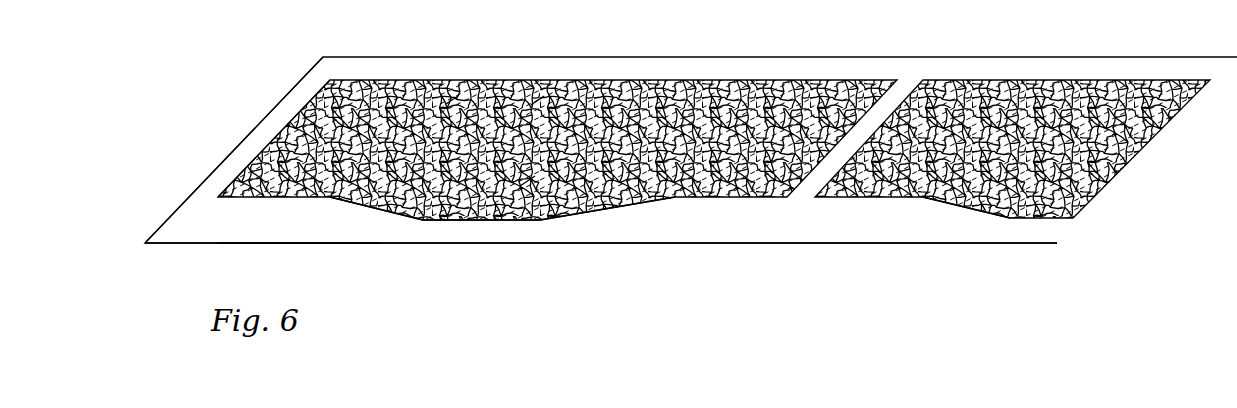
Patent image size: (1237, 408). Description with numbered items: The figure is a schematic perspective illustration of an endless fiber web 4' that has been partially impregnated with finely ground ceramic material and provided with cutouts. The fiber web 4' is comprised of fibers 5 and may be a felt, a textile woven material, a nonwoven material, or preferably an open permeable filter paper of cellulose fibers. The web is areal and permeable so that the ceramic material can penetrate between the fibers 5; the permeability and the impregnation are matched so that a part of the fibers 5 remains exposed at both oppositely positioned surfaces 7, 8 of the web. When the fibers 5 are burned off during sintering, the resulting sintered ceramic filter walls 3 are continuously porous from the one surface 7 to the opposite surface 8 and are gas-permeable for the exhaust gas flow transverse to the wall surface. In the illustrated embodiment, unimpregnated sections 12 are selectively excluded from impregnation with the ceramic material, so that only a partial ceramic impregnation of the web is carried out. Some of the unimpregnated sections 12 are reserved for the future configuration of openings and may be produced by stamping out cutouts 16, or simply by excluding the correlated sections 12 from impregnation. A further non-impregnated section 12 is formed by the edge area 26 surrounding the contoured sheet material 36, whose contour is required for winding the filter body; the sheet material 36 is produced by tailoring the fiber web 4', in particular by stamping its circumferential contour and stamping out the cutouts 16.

The endless fiber web 4' is at (688, 150).
The contoured sheet material 36 is at (280, 135).
The filter walls 3 is at (690, 108).
The surface 7 is at (452, 100).
The fibers 5 is at (537, 100).
The unimpregnated sections 12 is at (335, 218).
The cutouts 16 is at (527, 180).
The edge area 26 is at (280, 215).
The surface 8 is at (403, 243).